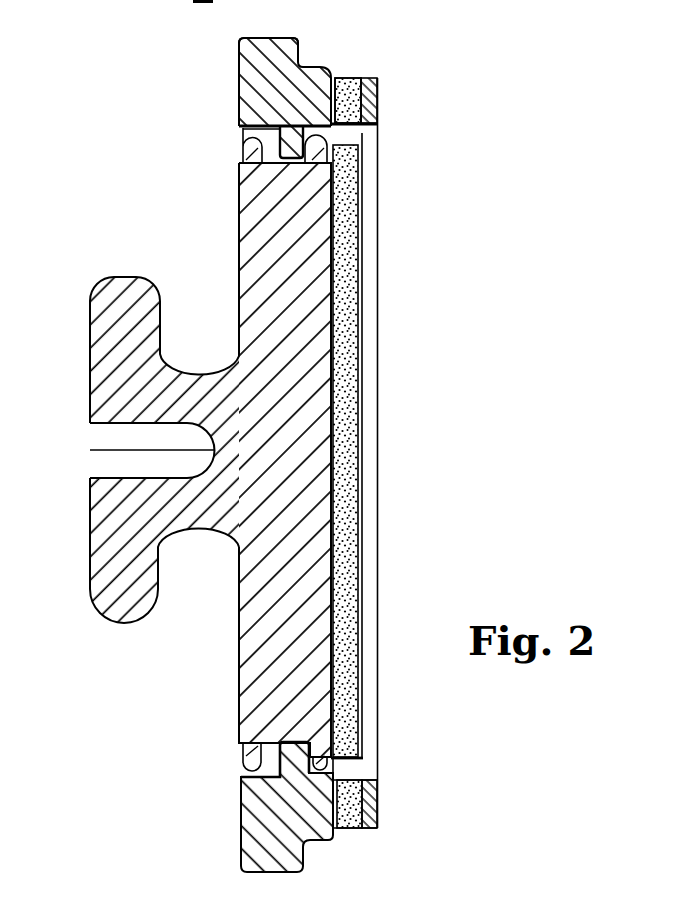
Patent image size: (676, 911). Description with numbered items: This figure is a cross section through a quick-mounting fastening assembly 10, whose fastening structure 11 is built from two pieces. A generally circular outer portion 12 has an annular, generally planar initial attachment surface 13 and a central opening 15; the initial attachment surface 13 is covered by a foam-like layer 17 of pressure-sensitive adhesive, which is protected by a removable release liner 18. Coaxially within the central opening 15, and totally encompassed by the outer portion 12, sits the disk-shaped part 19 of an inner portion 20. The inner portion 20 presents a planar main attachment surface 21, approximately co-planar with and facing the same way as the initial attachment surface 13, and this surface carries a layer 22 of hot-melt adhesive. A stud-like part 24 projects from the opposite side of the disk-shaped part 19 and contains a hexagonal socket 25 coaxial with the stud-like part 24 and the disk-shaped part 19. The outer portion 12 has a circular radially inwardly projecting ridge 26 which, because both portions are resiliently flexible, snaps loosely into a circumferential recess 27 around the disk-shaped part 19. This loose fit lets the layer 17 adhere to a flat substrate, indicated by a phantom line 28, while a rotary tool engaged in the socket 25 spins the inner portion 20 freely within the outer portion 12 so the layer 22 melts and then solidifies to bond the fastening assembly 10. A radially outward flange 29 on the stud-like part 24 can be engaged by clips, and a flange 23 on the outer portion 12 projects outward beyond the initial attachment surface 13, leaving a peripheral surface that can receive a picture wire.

The fastening assembly 10 is at (134, 232).
The fastening structure 11 is at (230, 155).
The outer portion 12 is at (232, 75).
The initial attachment surface 13 is at (345, 82).
The central opening 15 is at (262, 772).
The layer of pressure-sensitive adhesive 17 is at (350, 80).
The release liner 18 is at (369, 96).
The disk-shaped part 19 is at (272, 640).
The inner portion 20 is at (232, 231).
The main attachment surface 21 is at (336, 262).
The layer of hot-melt adhesive 22 is at (343, 560).
The flange 23 is at (271, 37).
The stud-like part 24 is at (115, 572).
The socket 25 is at (118, 425).
The ridge 26 is at (333, 769).
The circumferential recess 27 is at (252, 758).
The phantom line 28 is at (363, 592).
The flange 29 is at (123, 613).